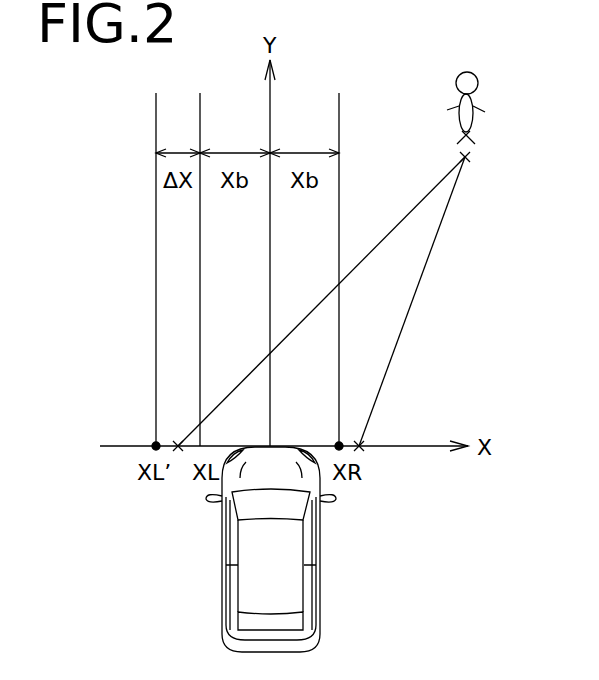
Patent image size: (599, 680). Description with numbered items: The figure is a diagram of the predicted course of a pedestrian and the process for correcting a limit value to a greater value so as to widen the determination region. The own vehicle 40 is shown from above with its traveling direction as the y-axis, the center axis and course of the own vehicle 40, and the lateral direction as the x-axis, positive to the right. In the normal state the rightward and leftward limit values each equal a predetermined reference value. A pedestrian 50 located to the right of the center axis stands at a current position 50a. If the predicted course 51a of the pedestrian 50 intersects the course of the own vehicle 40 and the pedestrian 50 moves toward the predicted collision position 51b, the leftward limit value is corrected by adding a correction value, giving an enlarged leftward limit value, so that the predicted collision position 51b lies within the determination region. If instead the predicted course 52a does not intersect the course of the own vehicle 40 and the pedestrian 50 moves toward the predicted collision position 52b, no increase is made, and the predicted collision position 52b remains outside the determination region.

The own vehicle 40 is at (220, 595).
The pedestrian 50 is at (478, 72).
The current position 50a is at (473, 158).
The predicted course 51a is at (400, 220).
The predicted course 52a is at (445, 260).
The predicted collision position 51b is at (180, 453).
The predicted collision position 52b is at (360, 455).